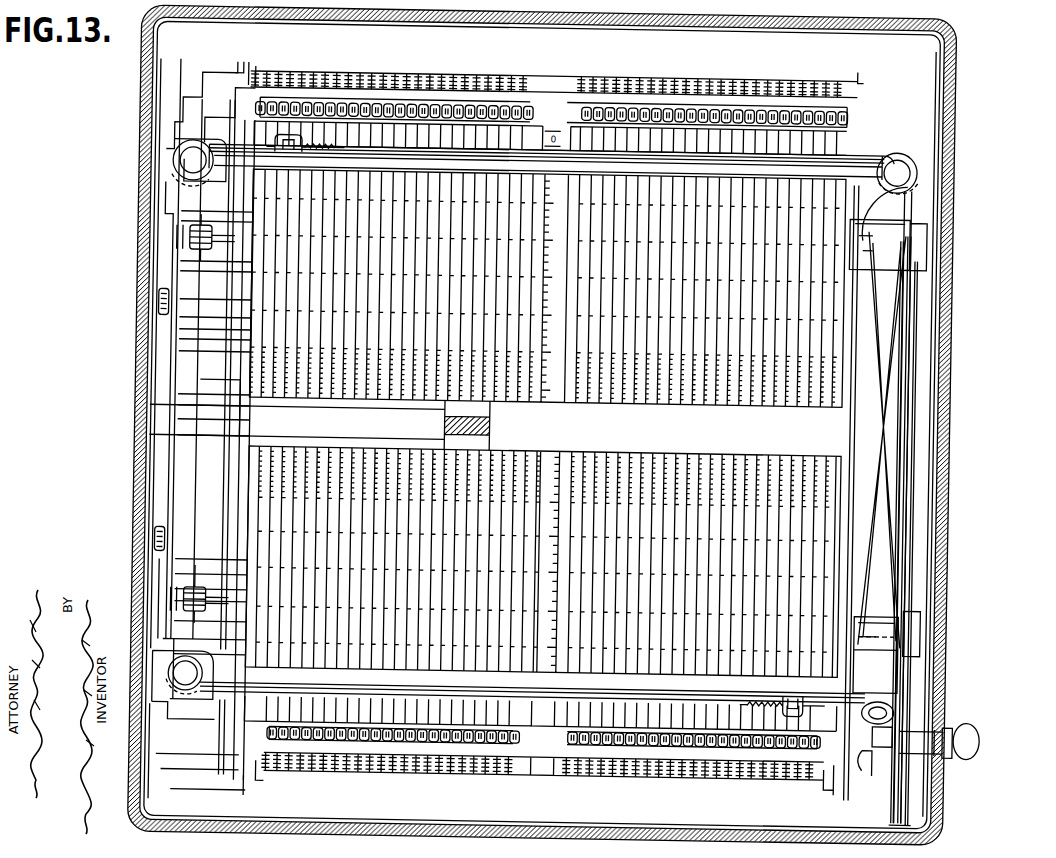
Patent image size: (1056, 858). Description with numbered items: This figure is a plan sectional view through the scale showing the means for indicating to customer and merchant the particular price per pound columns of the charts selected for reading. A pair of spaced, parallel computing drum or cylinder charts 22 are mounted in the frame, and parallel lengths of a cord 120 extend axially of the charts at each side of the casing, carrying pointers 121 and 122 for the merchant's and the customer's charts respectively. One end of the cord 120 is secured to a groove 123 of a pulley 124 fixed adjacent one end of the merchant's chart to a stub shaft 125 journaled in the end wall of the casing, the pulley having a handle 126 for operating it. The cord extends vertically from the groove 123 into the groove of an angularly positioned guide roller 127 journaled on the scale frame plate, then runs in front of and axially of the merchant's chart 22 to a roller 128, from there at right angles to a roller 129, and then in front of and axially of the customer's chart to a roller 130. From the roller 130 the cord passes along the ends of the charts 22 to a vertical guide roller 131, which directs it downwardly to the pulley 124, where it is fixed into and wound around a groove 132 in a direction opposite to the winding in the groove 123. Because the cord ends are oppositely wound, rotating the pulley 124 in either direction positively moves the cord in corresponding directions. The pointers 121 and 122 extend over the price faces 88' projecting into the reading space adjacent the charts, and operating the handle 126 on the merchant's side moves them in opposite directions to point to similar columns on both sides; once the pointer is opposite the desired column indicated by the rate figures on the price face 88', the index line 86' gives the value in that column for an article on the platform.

The computing drum or cylinder charts 22 is at (701, 454).
The index line 86' is at (553, 448).
The price faces 88' is at (546, 429).
The cord 120 is at (906, 460).
The pointer 121 is at (800, 718).
The pointer 122 is at (281, 126).
The groove 123 is at (905, 811).
The pulley 124 is at (912, 797).
The stub shaft 125 is at (877, 772).
The handle 126 is at (966, 717).
The guide roller 127 is at (898, 696).
The roller 128 is at (180, 673).
The roller 129 is at (189, 161).
The roller 130 is at (893, 162).
The vertical guide roller 131 is at (916, 640).
The groove 132 is at (912, 812).